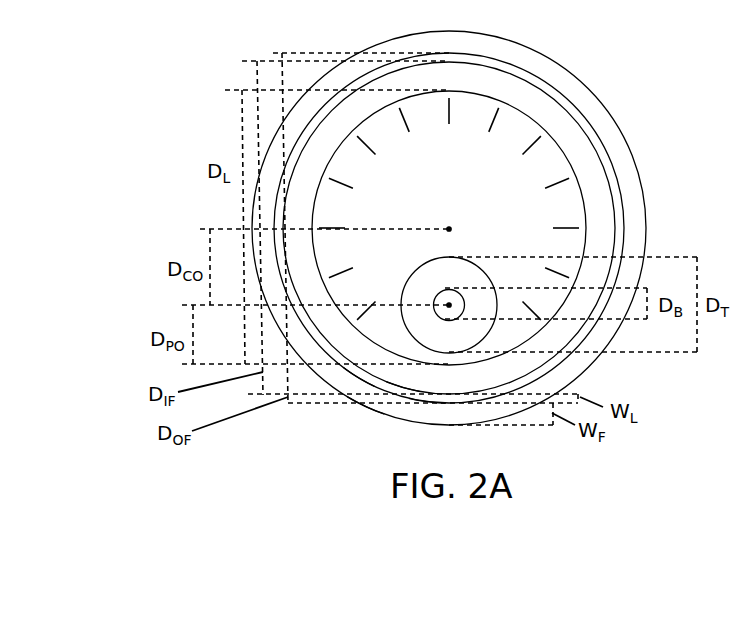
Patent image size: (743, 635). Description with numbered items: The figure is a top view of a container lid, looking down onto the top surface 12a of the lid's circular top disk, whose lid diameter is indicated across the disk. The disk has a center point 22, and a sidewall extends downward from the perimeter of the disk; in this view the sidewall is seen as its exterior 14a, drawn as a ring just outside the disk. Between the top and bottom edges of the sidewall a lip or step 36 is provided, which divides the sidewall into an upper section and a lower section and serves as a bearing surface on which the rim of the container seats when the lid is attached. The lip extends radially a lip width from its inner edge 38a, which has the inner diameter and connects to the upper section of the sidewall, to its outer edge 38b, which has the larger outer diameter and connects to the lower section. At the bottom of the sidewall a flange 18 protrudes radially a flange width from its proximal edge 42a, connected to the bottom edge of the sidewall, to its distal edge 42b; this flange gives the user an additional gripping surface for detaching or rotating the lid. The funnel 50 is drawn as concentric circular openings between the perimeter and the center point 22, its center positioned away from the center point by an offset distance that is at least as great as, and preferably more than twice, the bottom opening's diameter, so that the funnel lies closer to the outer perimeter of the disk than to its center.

The center point 22 is at (449, 228).
The top surface 12a is at (487, 165).
The flange 18 is at (602, 110).
The lip or step 36 is at (613, 185).
The exterior of the sidewall 14a is at (605, 235).
The post with bore 50 is at (449, 305).
The proximal edge 42a is at (358, 378).
The distal edge 42b is at (365, 407).
The inner edge 38a is at (402, 390).
The outer edge 38b is at (427, 400).